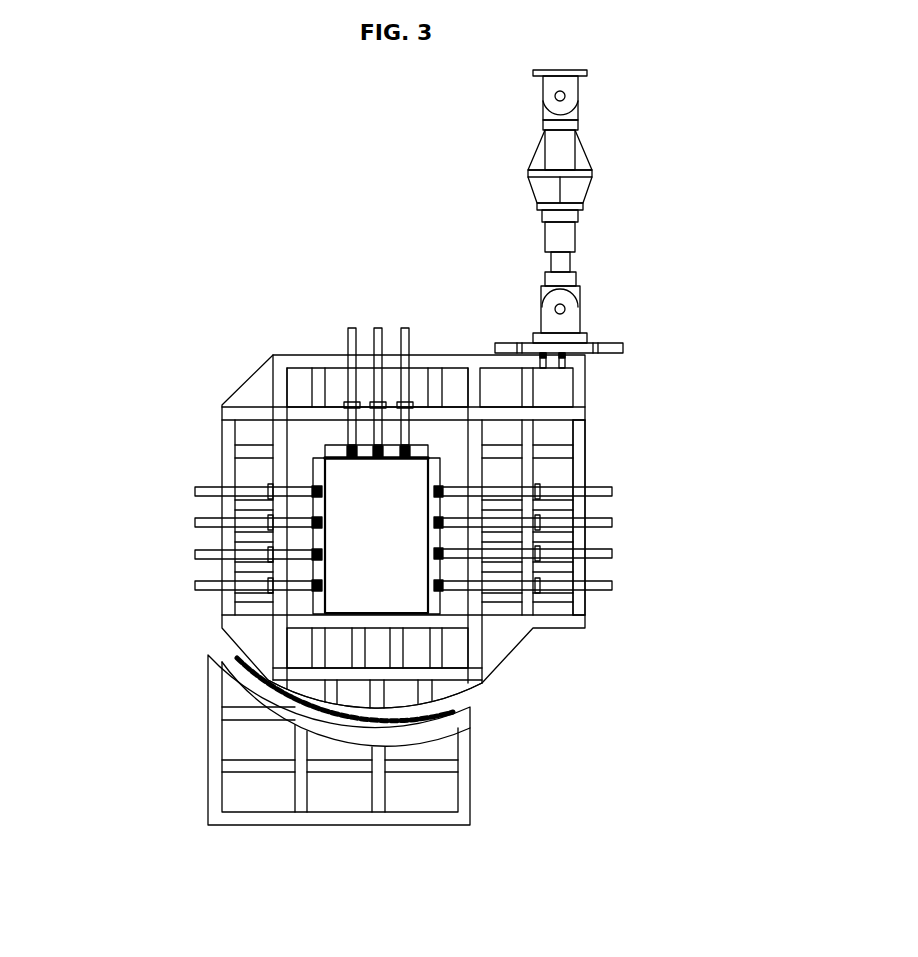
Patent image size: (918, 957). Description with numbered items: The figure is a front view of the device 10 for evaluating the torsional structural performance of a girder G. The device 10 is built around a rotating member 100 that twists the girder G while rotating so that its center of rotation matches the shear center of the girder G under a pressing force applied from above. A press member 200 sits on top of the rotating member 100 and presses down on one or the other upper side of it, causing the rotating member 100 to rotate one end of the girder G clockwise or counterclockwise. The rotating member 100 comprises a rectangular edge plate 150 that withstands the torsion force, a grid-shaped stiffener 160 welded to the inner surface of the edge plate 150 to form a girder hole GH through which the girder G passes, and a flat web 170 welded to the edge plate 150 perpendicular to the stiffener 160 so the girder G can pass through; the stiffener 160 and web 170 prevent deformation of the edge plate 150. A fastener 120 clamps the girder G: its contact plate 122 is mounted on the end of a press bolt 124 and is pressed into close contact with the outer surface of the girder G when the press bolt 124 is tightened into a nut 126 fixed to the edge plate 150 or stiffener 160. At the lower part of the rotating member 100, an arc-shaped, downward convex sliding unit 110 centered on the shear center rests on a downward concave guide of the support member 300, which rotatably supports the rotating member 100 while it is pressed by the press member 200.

The device for evaluating torsional structural performance of girder 10 is at (198, 222).
The rotating member 100 is at (594, 394).
The sliding unit 110 is at (462, 688).
The fastener 120 is at (112, 498).
The contact plate 122 is at (273, 498).
The press bolt 124 is at (300, 553).
The nut 126 is at (270, 583).
The edge plate 150 is at (582, 472).
The stiffener 160 is at (523, 545).
The web 170 is at (553, 435).
The press member 200 is at (607, 225).
The support member 300 is at (494, 778).
The girder G is at (335, 473).
The girder hole GH is at (318, 440).